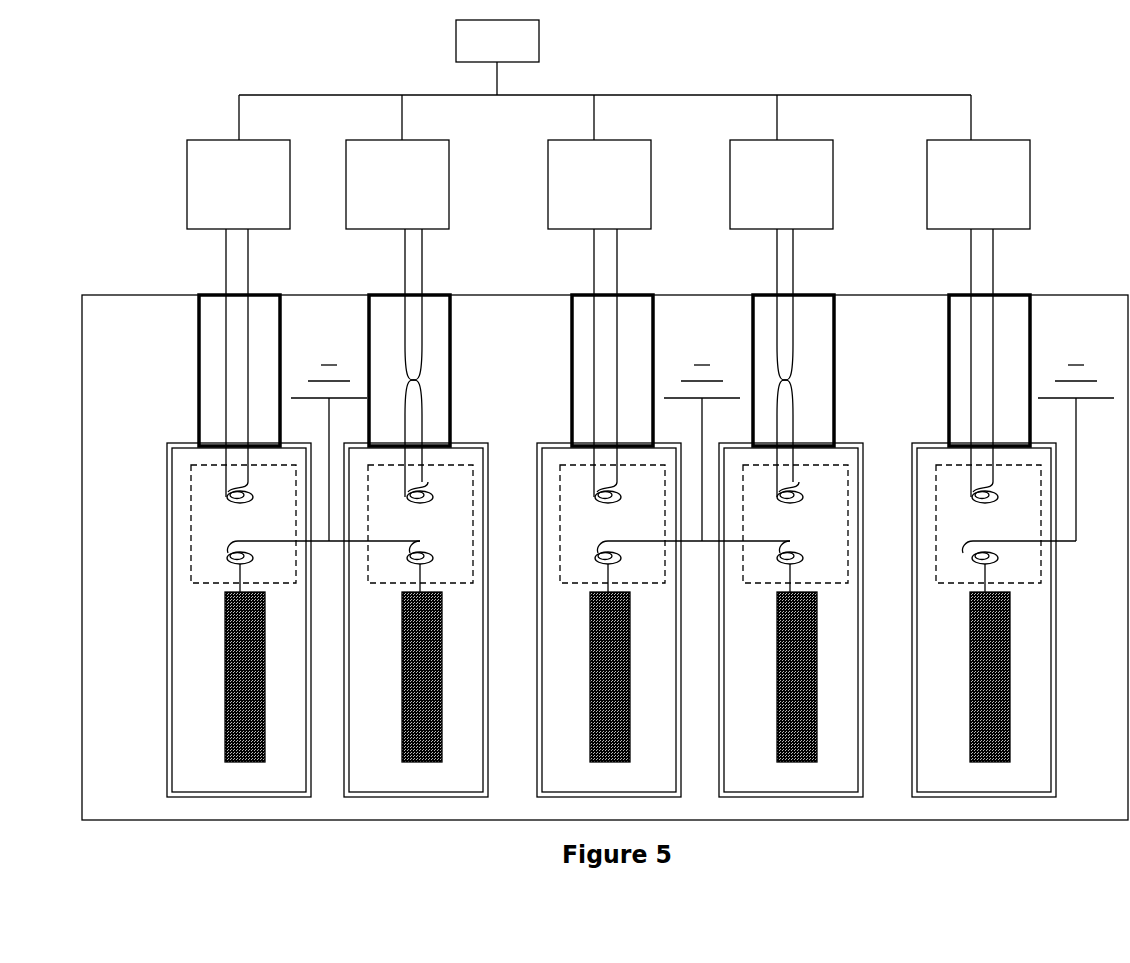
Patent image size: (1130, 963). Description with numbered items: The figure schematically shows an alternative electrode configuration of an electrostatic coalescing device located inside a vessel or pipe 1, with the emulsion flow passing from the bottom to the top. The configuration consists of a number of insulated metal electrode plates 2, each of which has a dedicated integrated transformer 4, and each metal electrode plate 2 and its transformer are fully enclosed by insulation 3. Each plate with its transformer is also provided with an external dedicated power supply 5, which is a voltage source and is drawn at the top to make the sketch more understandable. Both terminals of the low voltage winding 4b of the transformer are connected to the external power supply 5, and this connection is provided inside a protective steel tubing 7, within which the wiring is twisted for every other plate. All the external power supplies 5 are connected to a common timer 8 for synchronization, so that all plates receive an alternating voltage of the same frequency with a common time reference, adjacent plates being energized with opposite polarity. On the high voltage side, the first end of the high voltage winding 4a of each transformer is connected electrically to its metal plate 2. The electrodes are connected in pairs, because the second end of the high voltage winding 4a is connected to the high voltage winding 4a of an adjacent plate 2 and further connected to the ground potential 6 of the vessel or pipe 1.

The vessel or pipe 1 is at (170, 295).
The metal electrode plate 2 is at (617, 663).
The insulation 3 is at (611, 620).
The transformer 4 is at (193, 470).
The high voltage winding 4a is at (236, 556).
The low voltage winding 4b is at (238, 497).
The external power supply 5 is at (592, 162).
The ground potential 6 is at (308, 380).
The protective steel tubing 7 is at (370, 299).
The common timer 8 is at (605, 57).